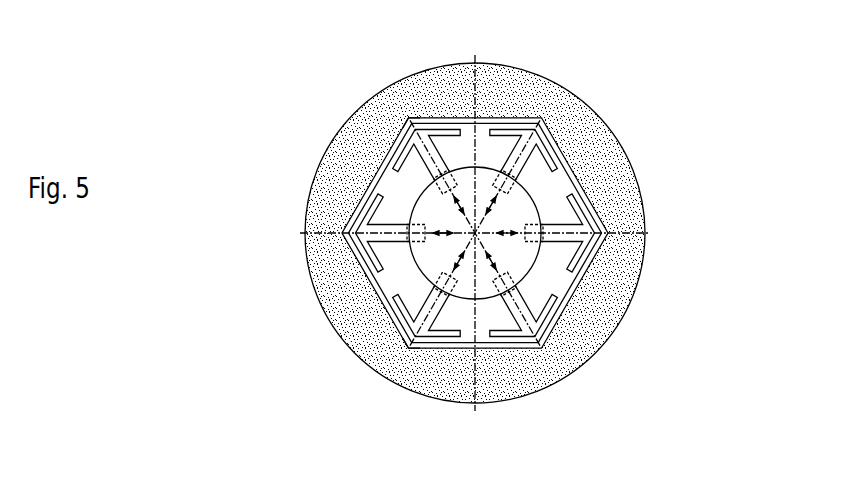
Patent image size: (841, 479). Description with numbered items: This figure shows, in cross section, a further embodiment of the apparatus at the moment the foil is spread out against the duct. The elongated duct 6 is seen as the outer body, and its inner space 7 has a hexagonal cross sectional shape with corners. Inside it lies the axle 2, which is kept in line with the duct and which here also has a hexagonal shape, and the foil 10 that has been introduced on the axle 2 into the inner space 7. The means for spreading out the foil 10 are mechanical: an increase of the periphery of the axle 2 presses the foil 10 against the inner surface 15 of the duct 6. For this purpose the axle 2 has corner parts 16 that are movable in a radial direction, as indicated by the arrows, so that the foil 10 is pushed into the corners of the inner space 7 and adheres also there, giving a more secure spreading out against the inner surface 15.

The axle 2 is at (520, 263).
The duct 6 is at (605, 177).
The inner space 7 is at (572, 167).
The foil 10 is at (590, 260).
The inner surface 15 is at (373, 178).
The corner parts 16 is at (412, 118).